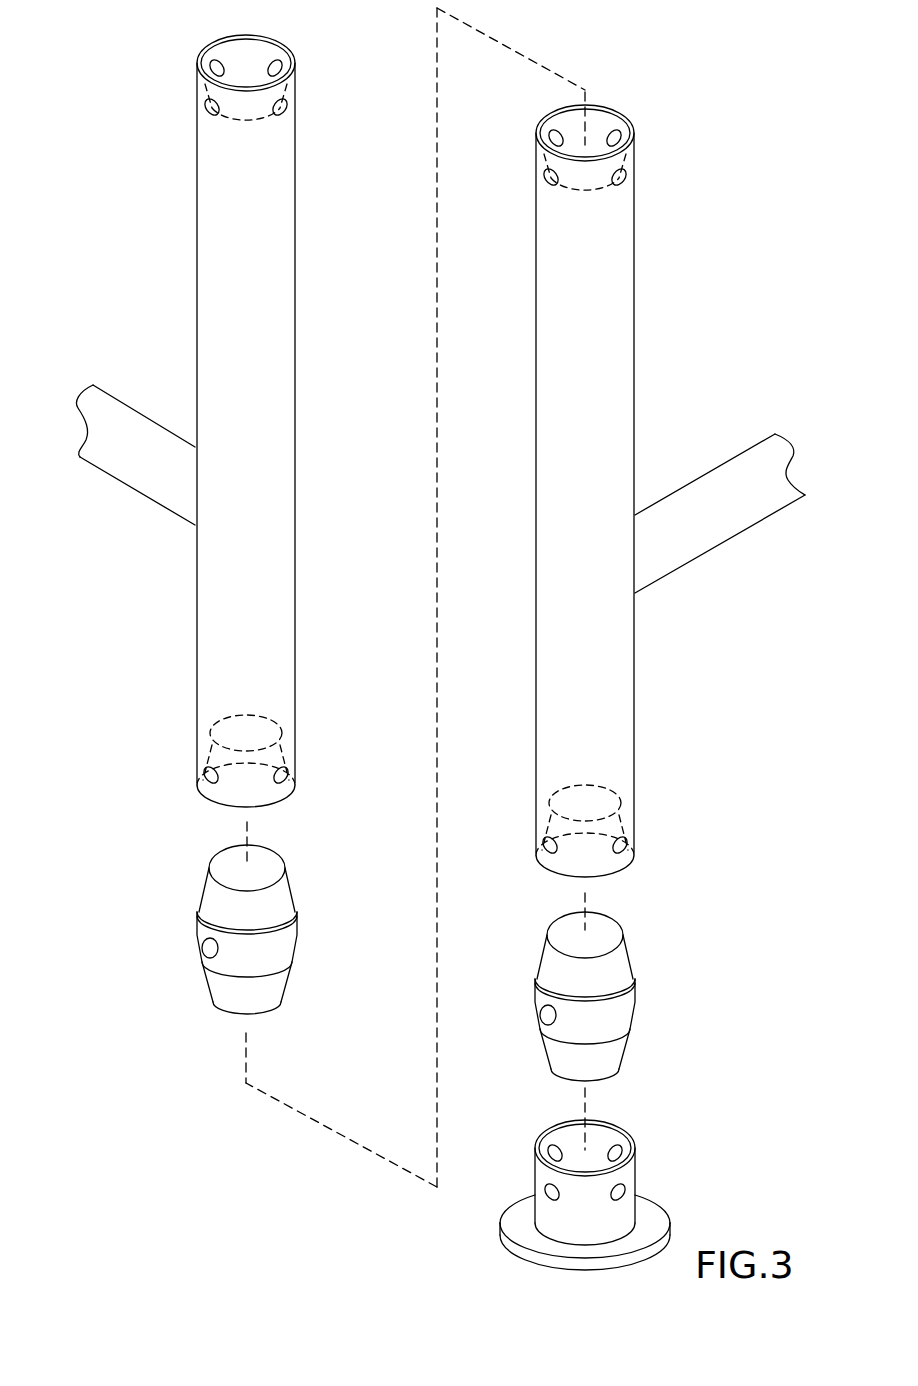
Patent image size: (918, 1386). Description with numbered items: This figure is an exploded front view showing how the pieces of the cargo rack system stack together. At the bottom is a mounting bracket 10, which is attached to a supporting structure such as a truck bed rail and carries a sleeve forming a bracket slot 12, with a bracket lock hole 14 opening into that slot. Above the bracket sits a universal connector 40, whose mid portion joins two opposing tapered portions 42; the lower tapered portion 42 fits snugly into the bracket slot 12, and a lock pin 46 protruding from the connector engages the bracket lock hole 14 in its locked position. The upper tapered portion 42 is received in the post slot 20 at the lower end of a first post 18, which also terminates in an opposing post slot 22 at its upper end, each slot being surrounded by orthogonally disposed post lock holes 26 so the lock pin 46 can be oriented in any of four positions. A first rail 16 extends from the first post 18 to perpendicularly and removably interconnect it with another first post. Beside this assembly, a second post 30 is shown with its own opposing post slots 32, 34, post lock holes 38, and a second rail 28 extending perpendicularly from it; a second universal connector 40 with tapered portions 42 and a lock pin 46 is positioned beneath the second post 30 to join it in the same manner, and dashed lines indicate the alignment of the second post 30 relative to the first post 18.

The mounting bracket 10 is at (515, 1243).
The bracket slot 12 is at (552, 1125).
The bracket lock hole 14 is at (628, 1135).
The first rail 16 is at (728, 525).
The first post 18 is at (545, 278).
The post slot 20 is at (550, 873).
The post slot 22 is at (550, 112).
The post lock hole 26 is at (628, 112).
The second rail 28 is at (121, 472).
The second post 30 is at (205, 211).
The post slot 32 is at (212, 805).
The post slot 34 is at (222, 50).
The post lock hole 38 is at (289, 50).
The universal connector 40 is at (212, 893).
The tapered portion 42 is at (280, 890).
The lock pin 46 is at (285, 875).